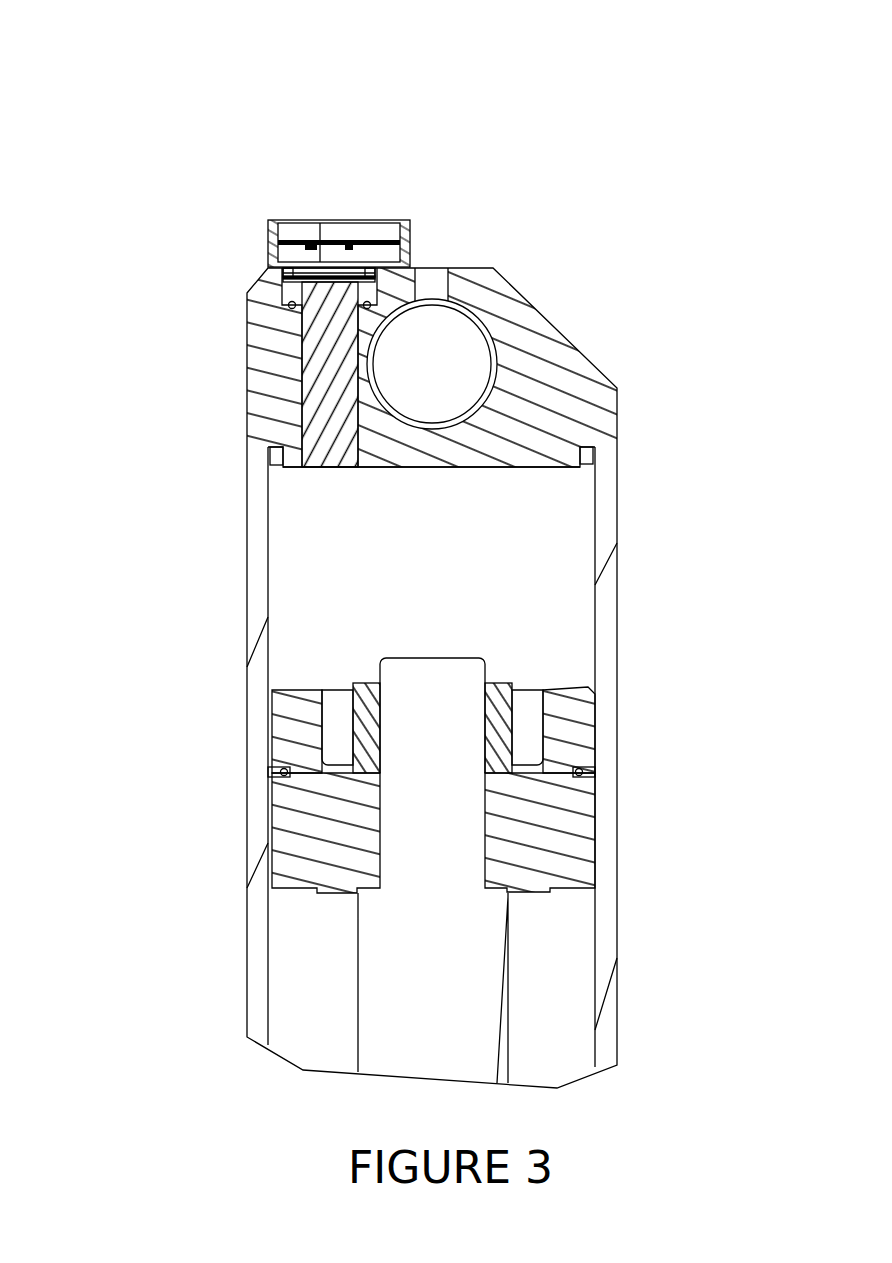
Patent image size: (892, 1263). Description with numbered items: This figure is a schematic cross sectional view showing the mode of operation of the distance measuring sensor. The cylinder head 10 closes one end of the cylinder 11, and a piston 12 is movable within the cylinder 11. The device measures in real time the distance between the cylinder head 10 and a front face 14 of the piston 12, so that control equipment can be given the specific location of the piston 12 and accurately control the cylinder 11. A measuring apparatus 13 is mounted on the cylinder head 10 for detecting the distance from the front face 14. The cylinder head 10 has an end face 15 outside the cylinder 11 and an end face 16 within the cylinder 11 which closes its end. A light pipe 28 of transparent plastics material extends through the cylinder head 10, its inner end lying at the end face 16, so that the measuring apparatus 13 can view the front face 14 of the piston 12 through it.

The cylinder head 10 is at (553, 313).
The cylinder 11 is at (243, 533).
The piston 12 is at (560, 825).
The measuring apparatus 13 is at (267, 230).
The front face 14 is at (293, 687).
The end face 15 is at (477, 265).
The end face 16 is at (545, 470).
The light pipe 28 is at (310, 372).